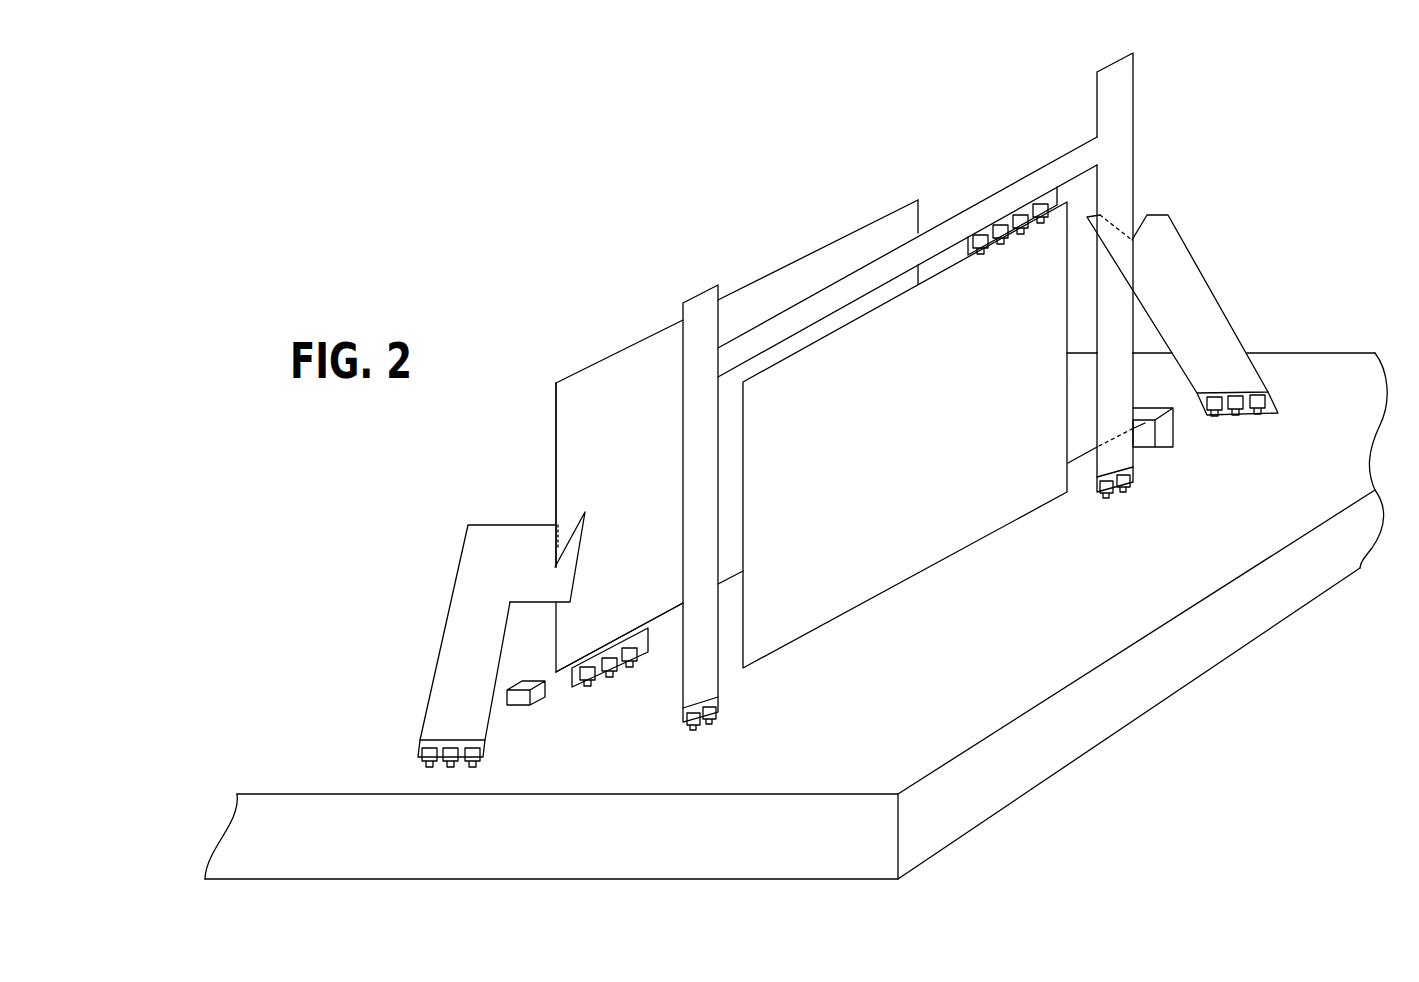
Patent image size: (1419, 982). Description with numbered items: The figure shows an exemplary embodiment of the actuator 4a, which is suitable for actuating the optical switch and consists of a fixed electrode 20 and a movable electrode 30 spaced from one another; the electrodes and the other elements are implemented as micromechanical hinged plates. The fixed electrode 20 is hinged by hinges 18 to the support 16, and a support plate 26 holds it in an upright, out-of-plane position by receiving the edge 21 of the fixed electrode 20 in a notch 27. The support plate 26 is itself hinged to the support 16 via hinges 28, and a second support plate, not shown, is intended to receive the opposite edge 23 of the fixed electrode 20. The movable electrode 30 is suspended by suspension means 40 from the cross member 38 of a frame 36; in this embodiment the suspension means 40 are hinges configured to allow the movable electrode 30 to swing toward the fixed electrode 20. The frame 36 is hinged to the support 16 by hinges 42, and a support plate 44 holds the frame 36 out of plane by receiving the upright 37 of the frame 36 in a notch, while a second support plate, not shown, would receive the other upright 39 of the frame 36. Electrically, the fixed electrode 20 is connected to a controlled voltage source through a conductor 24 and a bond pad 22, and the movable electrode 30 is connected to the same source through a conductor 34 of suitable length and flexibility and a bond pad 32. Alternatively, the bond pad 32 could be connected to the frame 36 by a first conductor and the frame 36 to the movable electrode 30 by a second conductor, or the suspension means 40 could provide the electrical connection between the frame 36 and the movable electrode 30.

The actuator 4a is at (925, 95).
The support 16 is at (970, 653).
The hinges 18 is at (565, 684).
The fixed electrode 20 is at (646, 457).
The edge 21 is at (554, 447).
The bond pad 22 is at (518, 705).
The edge 23 is at (918, 216).
The conductor 24 is at (542, 673).
The support plate 26 is at (516, 585).
The notch 27 is at (562, 555).
The hinges 28 is at (485, 757).
The movable electrode 30 is at (907, 455).
The bond pad 32 is at (1160, 432).
The conductor 34 is at (1083, 462).
The frame 36 is at (1134, 100).
The upright 37 is at (1130, 343).
The cross member 38 is at (995, 204).
The upright 39 is at (717, 537).
The suspension means 40 is at (1052, 190).
The hinges 42 is at (684, 722).
The support plate 44 is at (1204, 323).